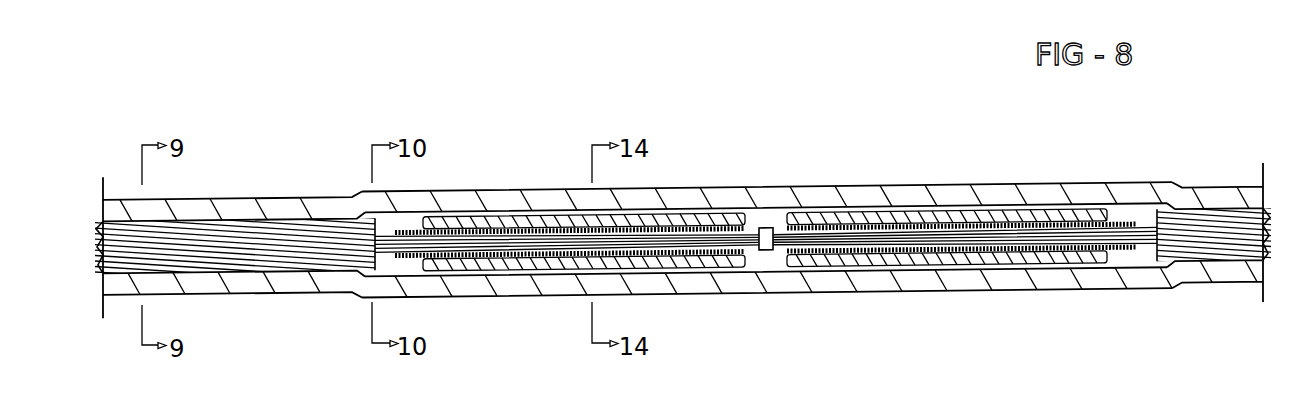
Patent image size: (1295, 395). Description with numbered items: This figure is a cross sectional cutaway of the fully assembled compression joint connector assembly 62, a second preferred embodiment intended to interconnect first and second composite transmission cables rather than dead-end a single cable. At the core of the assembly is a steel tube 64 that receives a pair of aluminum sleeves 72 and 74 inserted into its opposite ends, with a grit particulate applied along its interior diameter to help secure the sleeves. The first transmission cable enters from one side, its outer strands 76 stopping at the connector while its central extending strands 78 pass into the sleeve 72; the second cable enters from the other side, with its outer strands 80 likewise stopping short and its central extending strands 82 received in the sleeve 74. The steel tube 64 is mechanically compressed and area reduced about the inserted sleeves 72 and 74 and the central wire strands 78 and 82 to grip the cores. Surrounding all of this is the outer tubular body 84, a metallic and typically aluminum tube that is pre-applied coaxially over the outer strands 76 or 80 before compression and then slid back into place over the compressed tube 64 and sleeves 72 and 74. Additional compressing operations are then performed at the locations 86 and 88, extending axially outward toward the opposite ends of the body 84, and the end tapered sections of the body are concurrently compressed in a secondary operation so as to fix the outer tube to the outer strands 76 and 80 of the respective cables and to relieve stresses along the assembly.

The connector assembly 62 is at (540, 114).
The steel tube 64 is at (766, 239).
The aluminum sleeve 72 is at (766, 228).
The aluminum sleeve 74 is at (765, 240).
The outer strands 76 is at (235, 245).
The central extending strands 78 is at (766, 239).
The outer strands 80 is at (1214, 234).
The central extending strands 82 is at (766, 251).
The outer tubular body 84 is at (767, 239).
The compressing location 86 is at (234, 246).
The compressing location 88 is at (1215, 233).